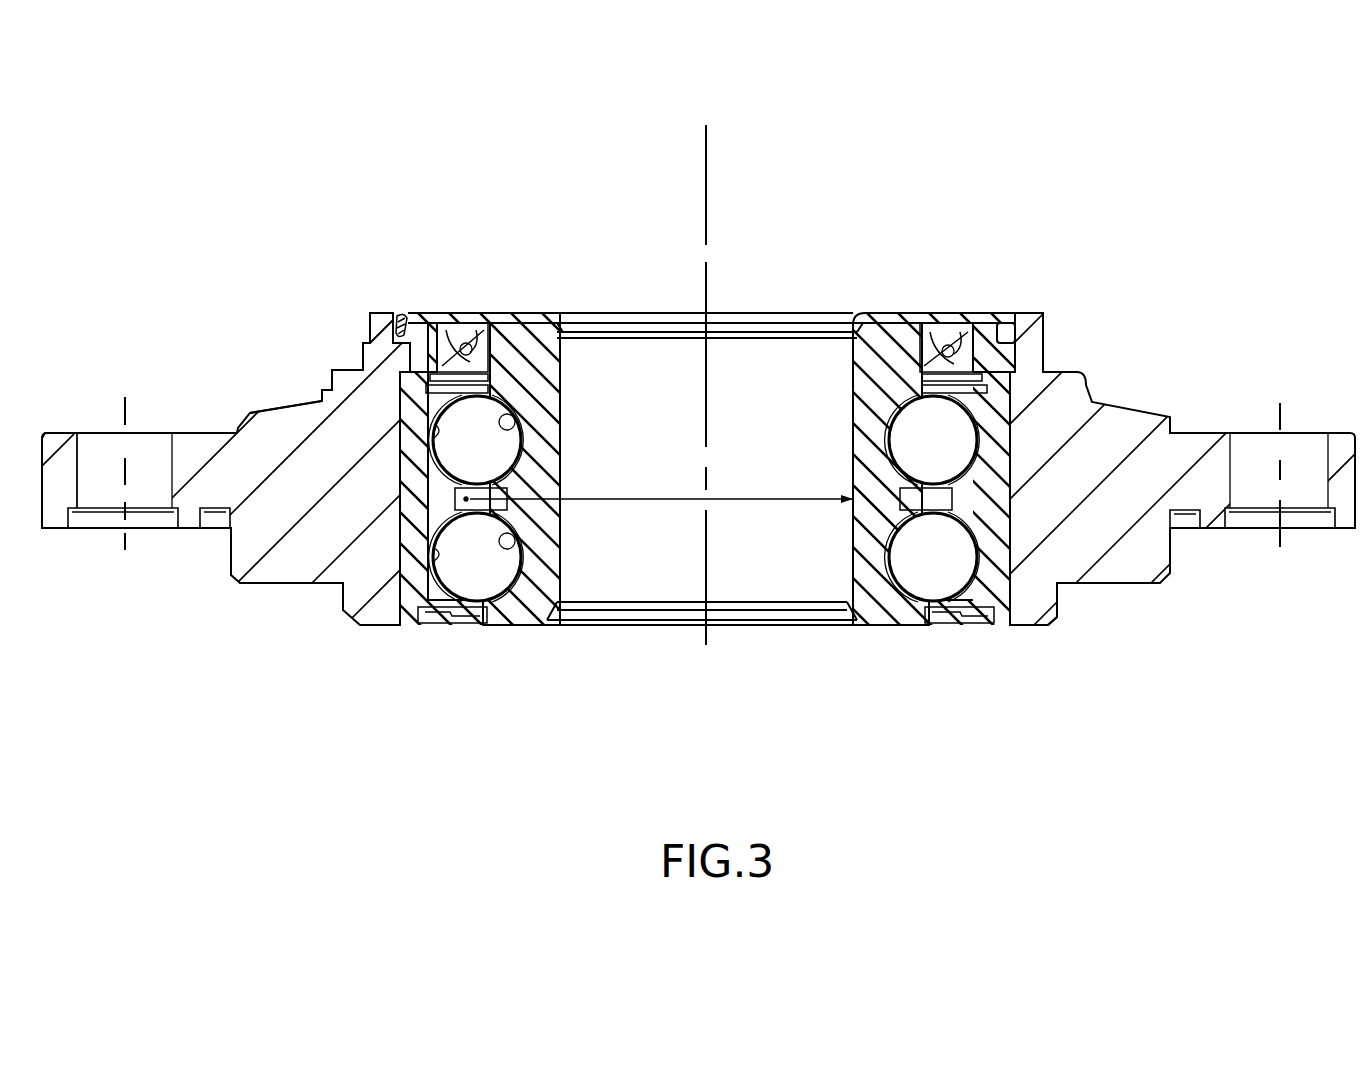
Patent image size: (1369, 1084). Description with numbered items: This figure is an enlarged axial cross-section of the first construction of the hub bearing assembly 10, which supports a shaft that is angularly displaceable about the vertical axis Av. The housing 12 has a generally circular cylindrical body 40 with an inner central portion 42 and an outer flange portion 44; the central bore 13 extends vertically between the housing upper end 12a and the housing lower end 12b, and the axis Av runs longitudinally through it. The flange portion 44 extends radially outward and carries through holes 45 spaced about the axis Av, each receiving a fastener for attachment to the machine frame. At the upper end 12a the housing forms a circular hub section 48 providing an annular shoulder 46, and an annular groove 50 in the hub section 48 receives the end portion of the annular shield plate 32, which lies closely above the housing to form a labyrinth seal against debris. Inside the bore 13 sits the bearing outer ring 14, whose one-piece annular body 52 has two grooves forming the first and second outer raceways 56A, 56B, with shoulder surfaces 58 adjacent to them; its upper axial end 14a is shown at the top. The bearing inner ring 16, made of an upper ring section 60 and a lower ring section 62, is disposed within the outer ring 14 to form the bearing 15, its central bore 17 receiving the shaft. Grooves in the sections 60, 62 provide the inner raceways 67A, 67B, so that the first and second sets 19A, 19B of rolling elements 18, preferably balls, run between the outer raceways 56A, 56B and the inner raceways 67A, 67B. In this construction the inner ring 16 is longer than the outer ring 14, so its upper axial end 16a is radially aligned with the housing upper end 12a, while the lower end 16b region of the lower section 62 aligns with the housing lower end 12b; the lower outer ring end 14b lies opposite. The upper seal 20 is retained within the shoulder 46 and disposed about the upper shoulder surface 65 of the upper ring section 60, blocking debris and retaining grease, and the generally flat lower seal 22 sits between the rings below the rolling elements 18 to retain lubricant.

The hub bearing assembly 10 is at (275, 180).
The vertical axis Av is at (713, 170).
The housing 12 is at (266, 614).
The housing upper end 12a is at (1022, 312).
The housing lower end 12b is at (1018, 633).
The central bore 13 is at (413, 578).
The bearing outer ring 14 is at (985, 633).
The upper axial end of the bearing outer ring 14a is at (420, 368).
The second inner ring portion 14b is at (421, 634).
The bearing 15 is at (938, 663).
The bearing inner ring 16 is at (888, 633).
The upper axial end of the bearing inner ring 16a is at (528, 311).
The second outer ring portion 16b is at (526, 631).
The central bore of the inner ring 17 is at (568, 368).
The rolling elements 18 is at (508, 447).
The first set of rolling elements 19A is at (888, 440).
The second set of rolling elements 19B is at (888, 558).
The upper seal 20 is at (950, 311).
The lower seal 22 is at (462, 631).
The annular shield plate 32 is at (467, 304).
The generally circular cylindrical body 40 is at (216, 428).
The inner central portion 42 is at (319, 399).
The outer flange portion 44 is at (67, 428).
The through holes 45 is at (398, 464).
The annular shoulder 46 is at (991, 314).
The circular hub section 48 is at (373, 311).
The annular groove 50 is at (401, 314).
The one-piece annular body 52 is at (401, 493).
The first outer raceway 56A is at (433, 429).
The second outer raceway 56B is at (433, 554).
The shoulder surfaces 58 is at (470, 497).
The upper ring section 60 is at (566, 398).
The lower ring section 62 is at (564, 578).
The upper shoulder surface 65 is at (563, 380).
The first inner raceway 67A is at (516, 425).
The second inner raceway 67B is at (516, 537).